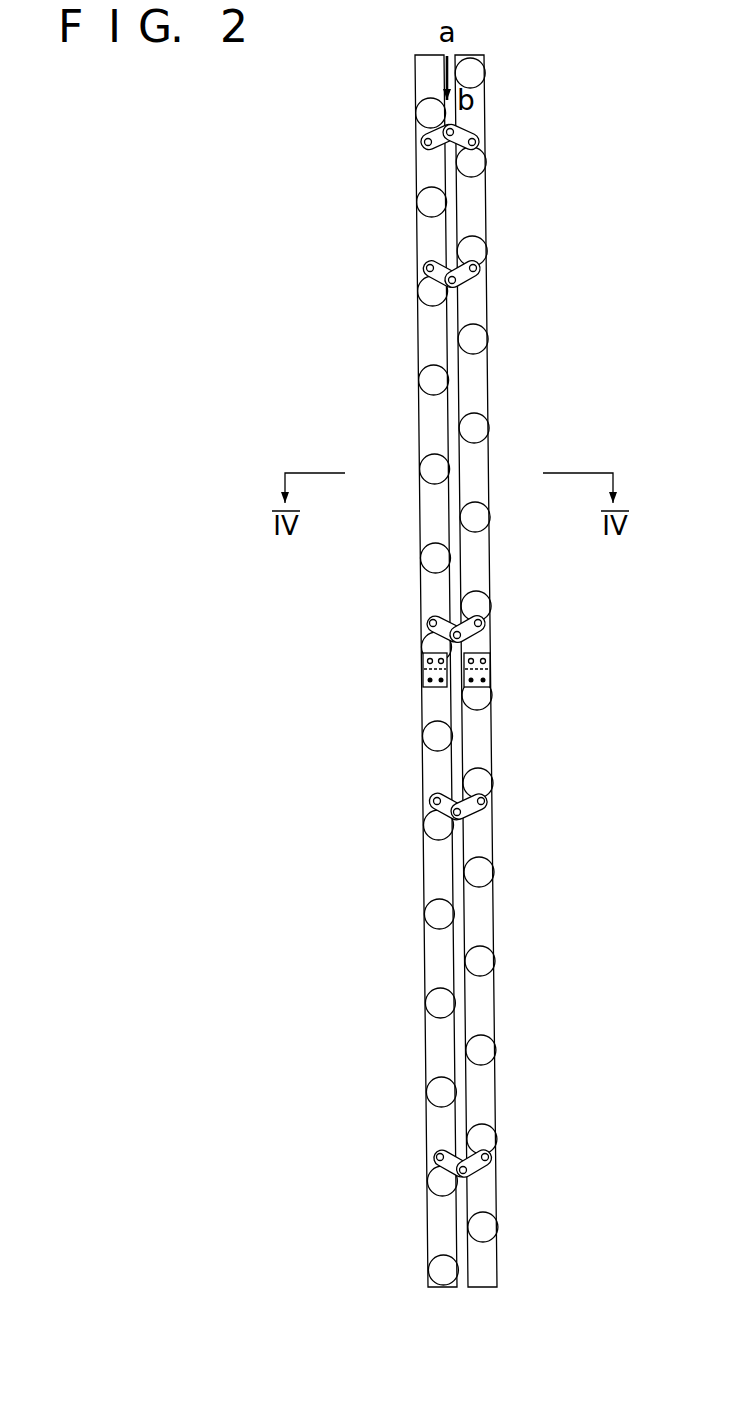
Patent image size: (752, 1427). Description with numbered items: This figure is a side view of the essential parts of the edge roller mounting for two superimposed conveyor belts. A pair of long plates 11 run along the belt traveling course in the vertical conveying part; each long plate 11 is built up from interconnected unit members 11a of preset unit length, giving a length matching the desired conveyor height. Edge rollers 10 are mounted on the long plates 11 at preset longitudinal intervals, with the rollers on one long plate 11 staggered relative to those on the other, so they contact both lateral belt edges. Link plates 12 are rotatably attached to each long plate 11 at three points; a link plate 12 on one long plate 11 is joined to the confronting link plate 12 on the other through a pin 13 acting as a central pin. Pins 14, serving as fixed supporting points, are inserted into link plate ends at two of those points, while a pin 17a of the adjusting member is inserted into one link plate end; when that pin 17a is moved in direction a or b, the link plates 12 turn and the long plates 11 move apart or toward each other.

The edge roller 10 is at (456, 671).
The long plate 11 is at (449, 647).
The unit member 11a is at (448, 671).
The link plate 12 is at (446, 639).
The pin 13 is at (441, 643).
The pin 14 is at (417, 297).
The pin 17a is at (444, 128).